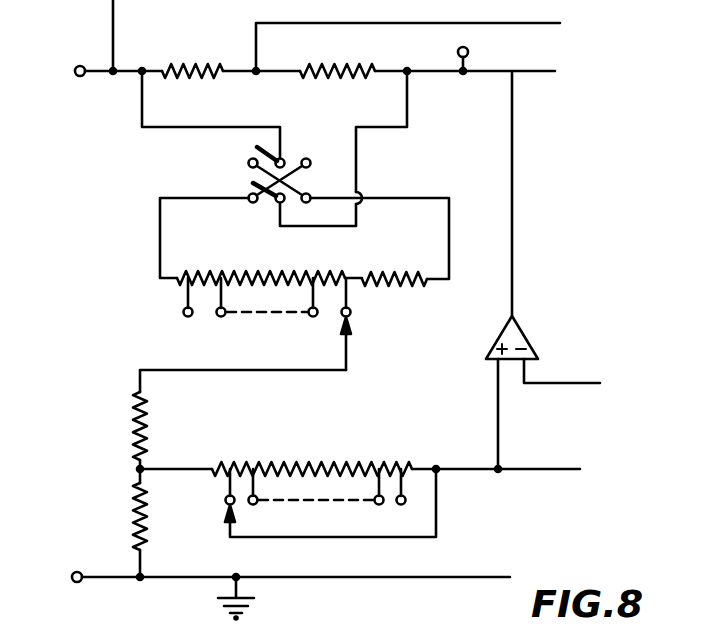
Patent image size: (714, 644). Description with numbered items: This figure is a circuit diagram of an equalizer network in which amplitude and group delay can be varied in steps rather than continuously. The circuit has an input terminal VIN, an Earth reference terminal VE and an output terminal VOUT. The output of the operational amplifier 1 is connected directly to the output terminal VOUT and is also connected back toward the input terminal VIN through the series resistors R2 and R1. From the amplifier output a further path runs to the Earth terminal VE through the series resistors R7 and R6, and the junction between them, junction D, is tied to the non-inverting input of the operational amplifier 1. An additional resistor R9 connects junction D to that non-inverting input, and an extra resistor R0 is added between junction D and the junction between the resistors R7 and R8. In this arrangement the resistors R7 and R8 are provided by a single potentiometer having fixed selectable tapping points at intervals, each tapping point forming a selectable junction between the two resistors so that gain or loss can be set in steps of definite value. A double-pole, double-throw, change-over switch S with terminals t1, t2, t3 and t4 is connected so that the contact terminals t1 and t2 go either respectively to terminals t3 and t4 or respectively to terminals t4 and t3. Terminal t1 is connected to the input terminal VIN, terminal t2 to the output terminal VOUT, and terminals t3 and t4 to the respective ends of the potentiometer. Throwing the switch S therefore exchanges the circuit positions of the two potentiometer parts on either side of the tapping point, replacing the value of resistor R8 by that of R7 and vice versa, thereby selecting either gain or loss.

The operational amplifier 1 is at (524, 334).
The resistor R1 is at (192, 56).
The resistor R2 is at (337, 55).
The resistor R6 is at (120, 516).
The resistor R7 is at (264, 305).
The resistor R8 is at (406, 263).
The resistor R9 is at (324, 484).
The resistor R0 is at (122, 426).
The double-pole, double-throw, change-over switch S is at (270, 185).
The switch terminal t1 is at (290, 149).
The switch terminal t2 is at (266, 218).
The switch terminal t3 is at (233, 213).
The switch terminal t4 is at (317, 187).
The input terminal VIN is at (51, 64).
The output terminal VOUT is at (495, 45).
The Earth reference terminal VE is at (59, 577).